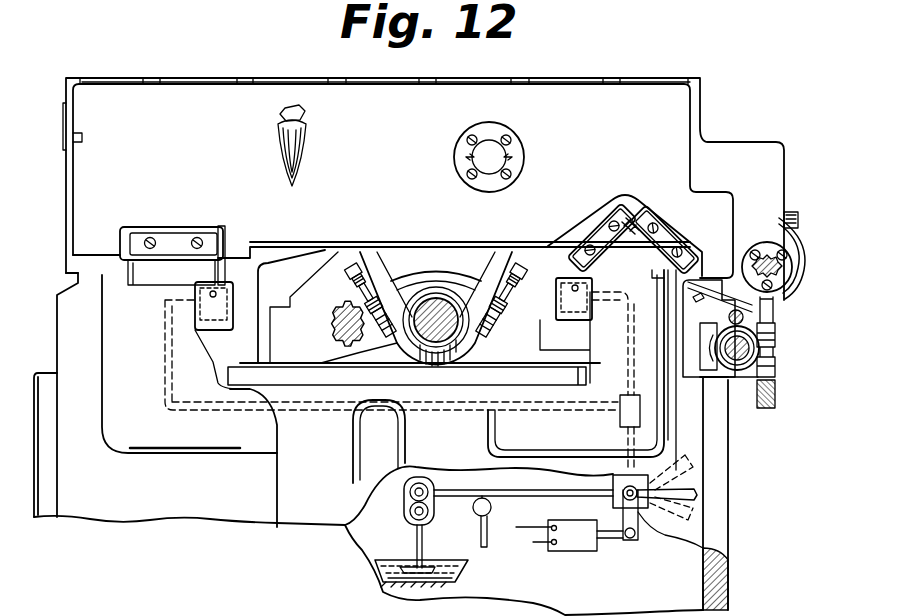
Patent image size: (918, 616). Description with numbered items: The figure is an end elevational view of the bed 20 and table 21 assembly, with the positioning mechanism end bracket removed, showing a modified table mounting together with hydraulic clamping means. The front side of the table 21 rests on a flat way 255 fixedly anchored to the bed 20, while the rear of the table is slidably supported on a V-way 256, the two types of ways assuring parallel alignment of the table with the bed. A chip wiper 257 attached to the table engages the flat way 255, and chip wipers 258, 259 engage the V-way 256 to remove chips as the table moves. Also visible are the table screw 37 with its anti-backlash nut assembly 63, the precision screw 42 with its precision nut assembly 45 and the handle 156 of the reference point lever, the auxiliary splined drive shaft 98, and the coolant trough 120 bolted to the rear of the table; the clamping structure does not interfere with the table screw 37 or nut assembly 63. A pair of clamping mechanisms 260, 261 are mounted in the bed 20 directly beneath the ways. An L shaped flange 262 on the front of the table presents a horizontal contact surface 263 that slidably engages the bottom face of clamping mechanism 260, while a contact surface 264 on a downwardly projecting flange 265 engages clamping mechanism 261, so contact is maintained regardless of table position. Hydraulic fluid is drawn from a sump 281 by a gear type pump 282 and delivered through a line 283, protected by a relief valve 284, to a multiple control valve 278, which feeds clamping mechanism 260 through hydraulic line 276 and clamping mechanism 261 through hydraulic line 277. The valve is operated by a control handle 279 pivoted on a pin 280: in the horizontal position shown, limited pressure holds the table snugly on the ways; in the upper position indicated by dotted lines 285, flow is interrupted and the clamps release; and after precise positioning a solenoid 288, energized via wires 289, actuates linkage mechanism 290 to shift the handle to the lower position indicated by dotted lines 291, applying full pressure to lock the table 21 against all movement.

The bed 20 is at (148, 510).
The table 21 is at (690, 82).
The table screw 37 is at (420, 347).
The precision screw 42 is at (747, 367).
The precision nut assembly 45 is at (770, 376).
The anti-backlash nut assembly 63 is at (436, 298).
The auxiliary splined drive shaft 98 is at (326, 330).
The coolant trough 120 is at (734, 146).
The handle 156 is at (771, 410).
The flat way 255 is at (158, 273).
The V-way 256 is at (625, 250).
The chip wiper 257 is at (213, 240).
The chip wiper 258 is at (580, 226).
The chip wiper 259 is at (672, 240).
The clamping mechanism 260 is at (236, 272).
The clamping mechanism 261 is at (605, 311).
The L shaped flange 262 is at (247, 302).
The horizontal contact surface 263 is at (212, 337).
The contact surface 264 is at (581, 320).
The downwardly projecting flange 265 is at (539, 287).
The hydraulic line 276 is at (307, 408).
The hydraulic line 277 is at (627, 368).
The multiple control valve 278 is at (611, 461).
The control handle 279 is at (698, 495).
The pin 280 is at (621, 498).
The sump 281 is at (378, 563).
The gear type pump 282 is at (406, 498).
The line 283 is at (523, 489).
The relief valve 284 is at (476, 506).
The dotted lines 285 is at (697, 459).
The solenoid 288 is at (579, 553).
The wires 289 is at (536, 542).
The linkage mechanism 290 is at (641, 546).
The dotted lines 291 is at (693, 520).